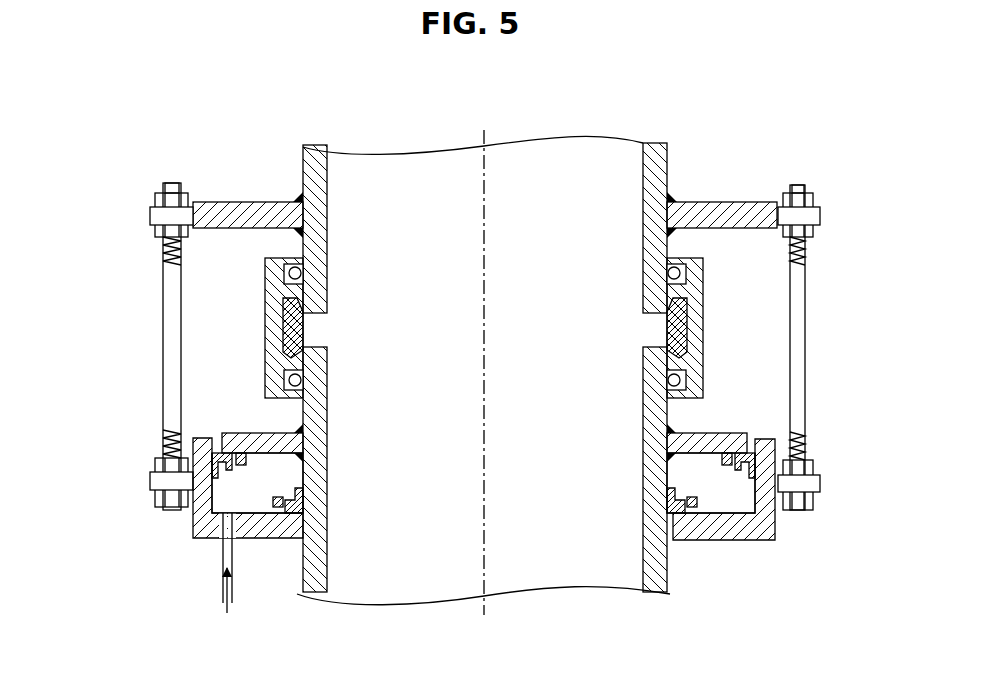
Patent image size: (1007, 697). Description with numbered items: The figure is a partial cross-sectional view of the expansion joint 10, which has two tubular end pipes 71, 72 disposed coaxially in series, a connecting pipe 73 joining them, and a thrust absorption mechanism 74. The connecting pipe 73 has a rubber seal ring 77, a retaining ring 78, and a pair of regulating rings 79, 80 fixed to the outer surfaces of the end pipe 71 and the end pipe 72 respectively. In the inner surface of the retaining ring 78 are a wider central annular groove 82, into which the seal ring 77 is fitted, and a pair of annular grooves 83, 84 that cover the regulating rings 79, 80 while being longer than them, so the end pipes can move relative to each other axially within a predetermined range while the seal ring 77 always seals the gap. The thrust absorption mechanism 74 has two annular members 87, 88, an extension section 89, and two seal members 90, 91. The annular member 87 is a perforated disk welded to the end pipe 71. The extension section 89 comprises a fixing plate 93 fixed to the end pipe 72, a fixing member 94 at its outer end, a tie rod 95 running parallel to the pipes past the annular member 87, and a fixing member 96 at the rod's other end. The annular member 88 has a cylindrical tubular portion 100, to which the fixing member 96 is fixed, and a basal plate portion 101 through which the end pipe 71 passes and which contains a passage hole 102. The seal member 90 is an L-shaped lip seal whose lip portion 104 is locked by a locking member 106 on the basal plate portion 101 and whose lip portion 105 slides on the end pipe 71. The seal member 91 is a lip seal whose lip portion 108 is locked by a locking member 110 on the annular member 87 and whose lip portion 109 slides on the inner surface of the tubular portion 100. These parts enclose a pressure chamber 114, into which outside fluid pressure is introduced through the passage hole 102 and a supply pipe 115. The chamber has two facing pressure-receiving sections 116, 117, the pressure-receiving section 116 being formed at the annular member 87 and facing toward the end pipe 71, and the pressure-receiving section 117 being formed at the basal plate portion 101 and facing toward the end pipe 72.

The expansion joint 10 is at (668, 122).
The end pipe 71 is at (670, 582).
The end pipe 72 is at (670, 174).
The connecting pipe 73 is at (558, 325).
The thrust absorption mechanism 74 is at (239, 516).
The seal ring 77 is at (690, 345).
The retaining ring 78 is at (690, 307).
The regulating ring 79 is at (686, 390).
The regulating ring 80 is at (680, 268).
The central annular groove 82 is at (690, 322).
The annular groove 83 is at (690, 365).
The annular groove 84 is at (692, 286).
The annular member 87 is at (240, 431).
The annular member 88 is at (263, 547).
The extension section 89 is at (126, 346).
The seal member 90 is at (286, 505).
The seal member 91 is at (216, 448).
The fixing plate 93 is at (257, 201).
The fixing member 94 is at (162, 214).
The tie rod 95 is at (170, 371).
The fixing member 96 is at (156, 479).
The tubular portion 100 is at (200, 446).
The basal plate portion 101 is at (283, 555).
The passage hole 102 is at (205, 541).
The lip portion 104 is at (683, 500).
The lip portion 105 is at (642, 500).
The locking member 106 is at (690, 505).
The lip portion 108 is at (762, 440).
The lip portion 109 is at (762, 462).
The locking member 110 is at (735, 476).
The pressure chamber 114 is at (236, 498).
The supply pipe 115 is at (218, 592).
The pressure-receiving section 116 is at (250, 462).
The pressure-receiving section 117 is at (290, 495).